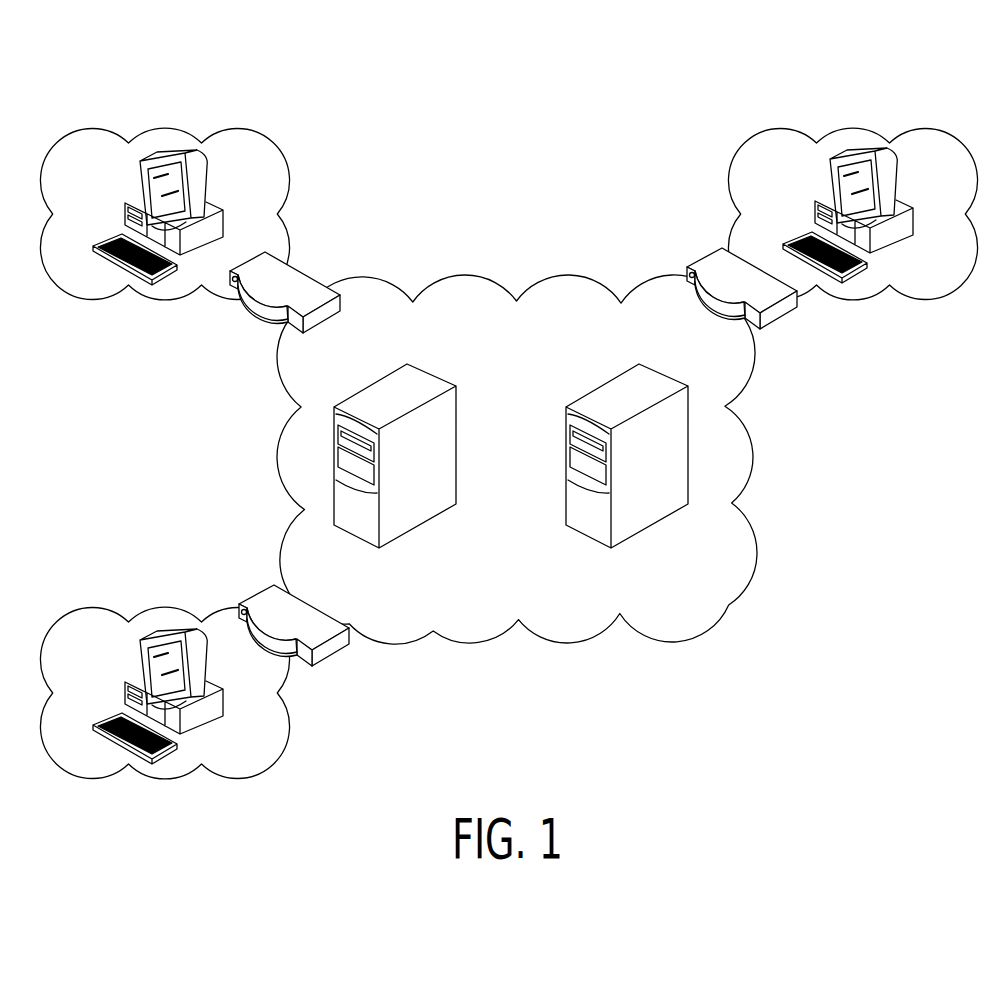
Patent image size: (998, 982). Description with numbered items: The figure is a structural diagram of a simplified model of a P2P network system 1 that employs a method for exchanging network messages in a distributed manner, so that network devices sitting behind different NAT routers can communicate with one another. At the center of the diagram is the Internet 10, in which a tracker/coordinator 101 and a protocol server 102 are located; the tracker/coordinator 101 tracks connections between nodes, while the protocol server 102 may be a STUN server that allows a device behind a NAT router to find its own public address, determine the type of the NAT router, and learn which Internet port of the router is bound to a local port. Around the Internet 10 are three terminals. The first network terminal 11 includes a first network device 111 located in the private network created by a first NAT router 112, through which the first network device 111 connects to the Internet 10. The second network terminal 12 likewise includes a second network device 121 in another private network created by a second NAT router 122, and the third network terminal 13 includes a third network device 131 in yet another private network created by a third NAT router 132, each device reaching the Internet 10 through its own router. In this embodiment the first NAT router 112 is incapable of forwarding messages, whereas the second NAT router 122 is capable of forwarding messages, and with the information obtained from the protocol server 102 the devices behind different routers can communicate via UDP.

The P2P network system 1 is at (878, 645).
The Internet 10 is at (547, 289).
The tracker/coordinator 101 is at (647, 382).
The protocol server 102 is at (416, 386).
The first network terminal 11 is at (340, 97).
The first network device 111 is at (173, 160).
The first NAT router 112 is at (306, 291).
The second network terminal 12 is at (237, 523).
The second network device 121 is at (170, 638).
The second NAT router 122 is at (264, 589).
The third network terminal 13 is at (890, 97).
The third network device 131 is at (865, 160).
The third NAT router 132 is at (710, 268).